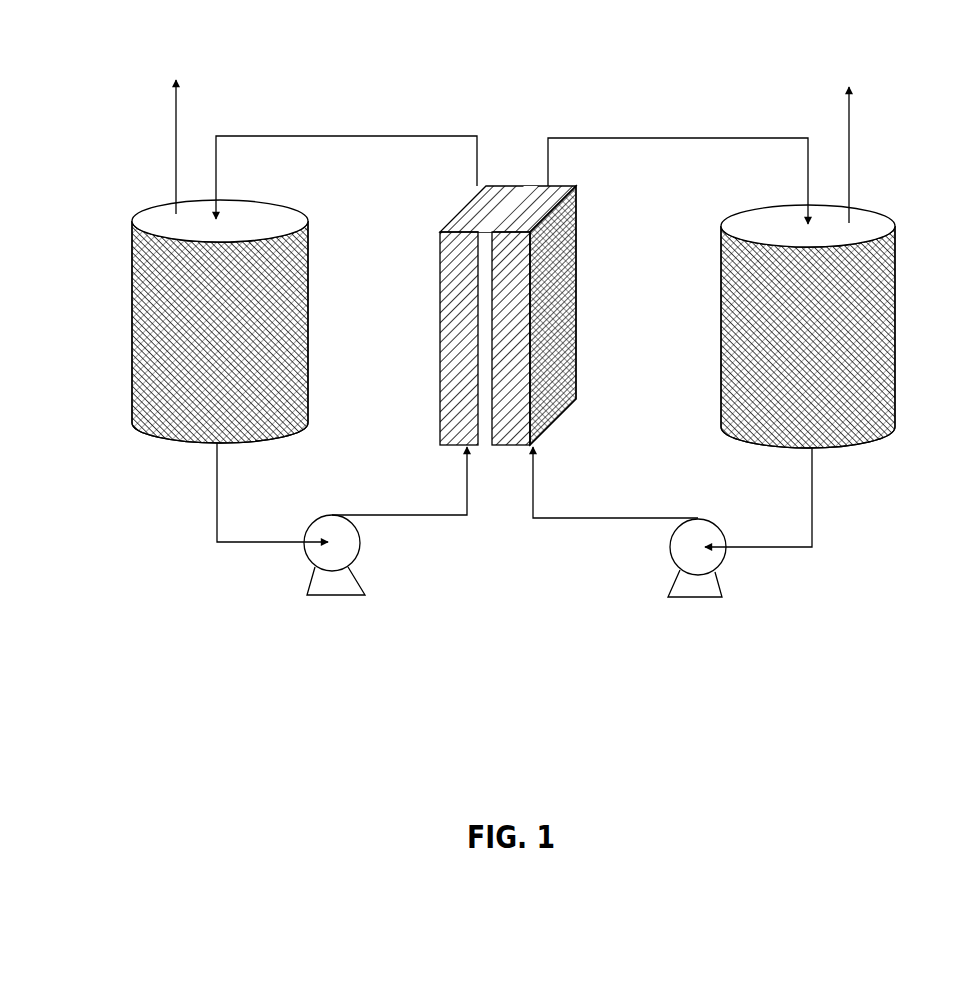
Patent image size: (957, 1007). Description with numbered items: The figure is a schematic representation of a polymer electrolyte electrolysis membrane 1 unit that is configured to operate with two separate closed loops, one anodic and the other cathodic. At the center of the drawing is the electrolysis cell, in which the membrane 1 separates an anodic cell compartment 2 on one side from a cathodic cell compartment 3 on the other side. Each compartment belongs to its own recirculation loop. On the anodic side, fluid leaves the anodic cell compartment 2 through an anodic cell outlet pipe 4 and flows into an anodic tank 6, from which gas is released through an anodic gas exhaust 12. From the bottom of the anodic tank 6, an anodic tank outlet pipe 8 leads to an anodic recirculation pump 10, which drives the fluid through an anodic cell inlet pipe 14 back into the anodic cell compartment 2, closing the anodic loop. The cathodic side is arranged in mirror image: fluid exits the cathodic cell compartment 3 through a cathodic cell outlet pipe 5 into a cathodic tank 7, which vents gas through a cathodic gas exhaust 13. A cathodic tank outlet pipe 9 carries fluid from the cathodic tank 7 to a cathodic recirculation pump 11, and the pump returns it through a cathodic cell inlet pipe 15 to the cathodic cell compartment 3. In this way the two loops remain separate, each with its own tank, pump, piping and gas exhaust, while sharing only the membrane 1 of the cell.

The polymer electrolyte electrolysis membrane 1 is at (491, 254).
The anodic cell compartment 2 is at (447, 243).
The cathodic cell compartment 3 is at (543, 245).
The anodic cell outlet pipe 4 is at (330, 133).
The cathodic cell outlet pipe 5 is at (700, 137).
The anodic tank 6 is at (180, 415).
The cathodic tank 7 is at (836, 427).
The anodic tank outlet pipe 8 is at (243, 545).
The cathodic tank outlet pipe 9 is at (805, 551).
The anodic recirculation pump 10 is at (307, 596).
The cathodic recirculation pump 11 is at (725, 600).
The anodic gas exhaust 12 is at (173, 160).
The cathodic gas exhaust 13 is at (853, 165).
The anodic cell inlet pipe 14 is at (450, 521).
The cathodic cell inlet pipe 15 is at (568, 522).